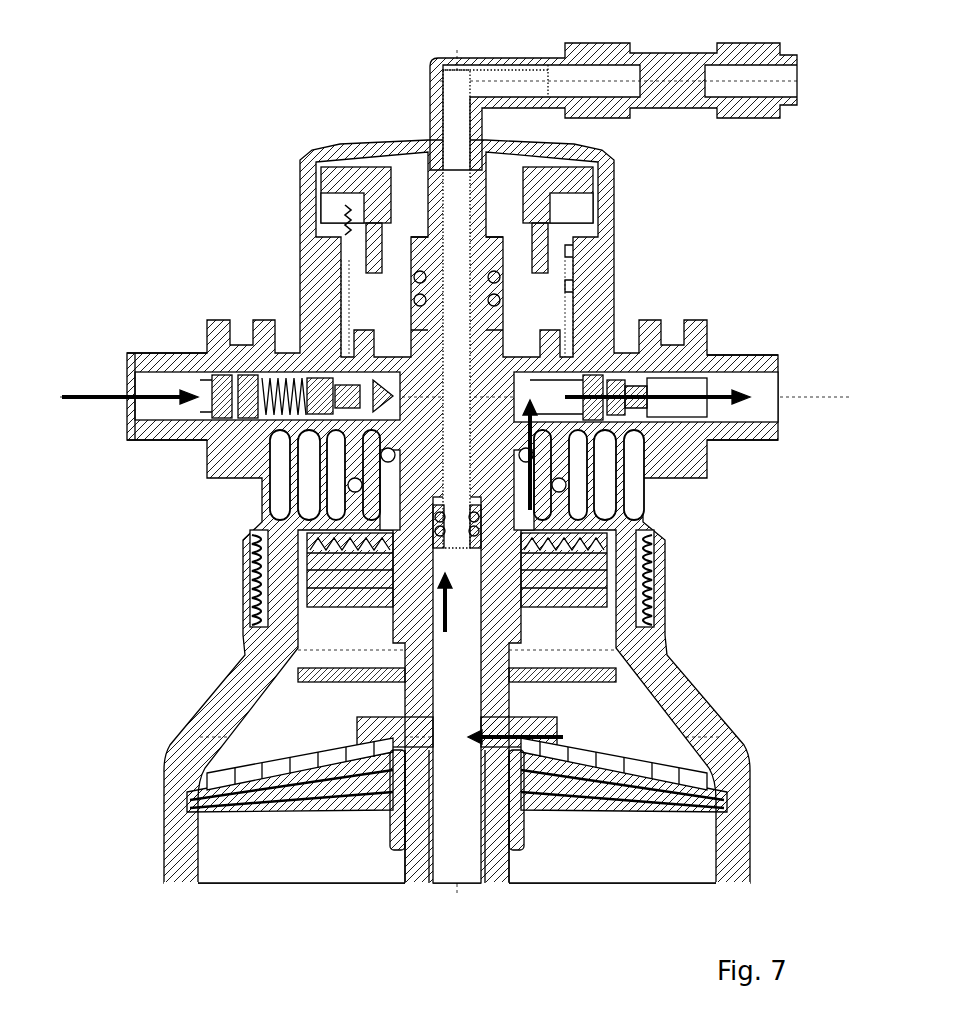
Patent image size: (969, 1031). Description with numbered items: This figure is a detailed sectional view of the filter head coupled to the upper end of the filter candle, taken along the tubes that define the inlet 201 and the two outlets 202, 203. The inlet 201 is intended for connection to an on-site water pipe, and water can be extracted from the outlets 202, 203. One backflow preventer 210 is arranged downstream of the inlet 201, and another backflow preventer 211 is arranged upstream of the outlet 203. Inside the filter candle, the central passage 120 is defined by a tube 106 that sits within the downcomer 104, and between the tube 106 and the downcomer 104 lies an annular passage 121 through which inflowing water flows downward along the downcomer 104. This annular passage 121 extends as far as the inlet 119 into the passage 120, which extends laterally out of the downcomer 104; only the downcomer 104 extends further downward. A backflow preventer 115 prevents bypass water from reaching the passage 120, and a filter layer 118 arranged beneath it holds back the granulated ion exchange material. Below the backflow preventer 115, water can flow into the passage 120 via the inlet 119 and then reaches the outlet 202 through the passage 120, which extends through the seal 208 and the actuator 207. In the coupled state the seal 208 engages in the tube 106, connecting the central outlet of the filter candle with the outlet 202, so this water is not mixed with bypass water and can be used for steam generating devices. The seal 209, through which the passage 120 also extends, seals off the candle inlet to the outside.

The downcomer 104 is at (513, 845).
The tube 106 is at (262, 602).
The backflow preventer 115 is at (330, 672).
The filter layer 118 is at (650, 783).
The inlet 119 is at (567, 733).
The central passage 120 is at (455, 632).
The annular passage 121 is at (480, 523).
The inlet 201 is at (150, 353).
The outlet 202 is at (752, 52).
The outlet 203 is at (783, 360).
The actuator 207 is at (480, 417).
The seal 208 is at (437, 518).
The seal 209 is at (413, 277).
The backflow preventer 210 is at (250, 392).
The backflow preventer 211 is at (625, 385).